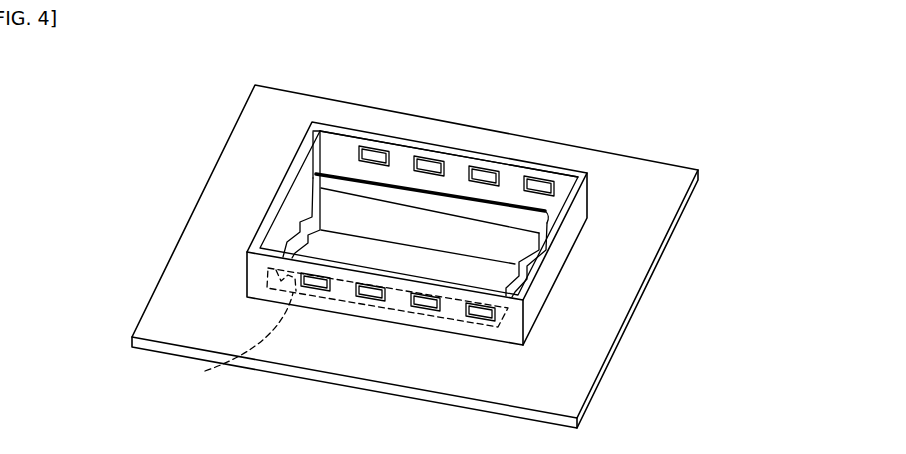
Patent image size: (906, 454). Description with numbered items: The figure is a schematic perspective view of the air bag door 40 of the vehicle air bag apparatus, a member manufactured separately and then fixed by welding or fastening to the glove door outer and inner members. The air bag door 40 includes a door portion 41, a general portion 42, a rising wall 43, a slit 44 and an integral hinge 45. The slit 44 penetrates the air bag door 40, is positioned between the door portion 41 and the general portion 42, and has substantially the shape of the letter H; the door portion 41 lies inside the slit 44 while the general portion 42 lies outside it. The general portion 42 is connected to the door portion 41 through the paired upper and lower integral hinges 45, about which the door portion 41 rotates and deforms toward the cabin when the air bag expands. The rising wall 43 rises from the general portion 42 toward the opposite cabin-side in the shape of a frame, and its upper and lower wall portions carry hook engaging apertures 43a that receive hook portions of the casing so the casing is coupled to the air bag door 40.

The air bag door 40 is at (662, 156).
The door portion 41 is at (377, 220).
The general portion 42 is at (592, 160).
The rising wall 43 is at (510, 163).
The hook engaging aperture 43a is at (382, 152).
The slit 44 is at (303, 202).
The integral hinge 45 is at (440, 205).